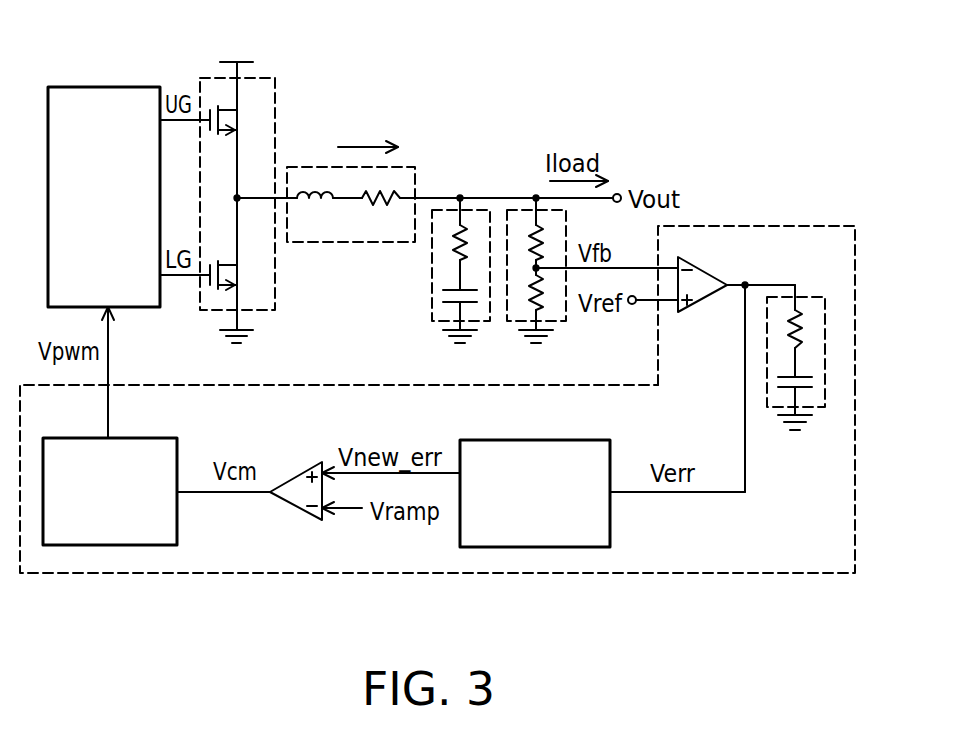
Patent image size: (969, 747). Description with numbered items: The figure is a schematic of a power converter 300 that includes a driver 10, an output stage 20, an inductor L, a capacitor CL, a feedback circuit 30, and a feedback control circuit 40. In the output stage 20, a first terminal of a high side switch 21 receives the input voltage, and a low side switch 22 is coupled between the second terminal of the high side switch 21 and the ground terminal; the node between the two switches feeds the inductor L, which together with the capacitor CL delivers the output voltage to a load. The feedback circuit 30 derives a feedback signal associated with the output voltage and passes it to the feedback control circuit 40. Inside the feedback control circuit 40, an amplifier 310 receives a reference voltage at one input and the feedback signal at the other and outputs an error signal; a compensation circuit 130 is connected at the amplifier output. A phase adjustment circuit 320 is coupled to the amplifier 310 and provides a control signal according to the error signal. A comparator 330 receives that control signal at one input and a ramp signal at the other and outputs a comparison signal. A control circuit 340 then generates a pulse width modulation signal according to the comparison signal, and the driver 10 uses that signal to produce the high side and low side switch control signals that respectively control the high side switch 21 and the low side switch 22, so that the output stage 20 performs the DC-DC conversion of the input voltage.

The driver 10 is at (105, 87).
The output stage 20 is at (276, 198).
The high side switch 21 is at (239, 119).
The low side switch 22 is at (239, 276).
The inductor L is at (313, 167).
The capacitor CL is at (432, 277).
The feedback circuit 30 is at (512, 192).
The feedback control circuit 40 is at (763, 226).
The amplifier 310 is at (702, 267).
The compensation circuit 130 is at (815, 297).
The phase adjustment circuit 320 is at (543, 440).
The comparator 330 is at (292, 479).
The control circuit 340 is at (158, 438).
The power converter 300 is at (848, 636).